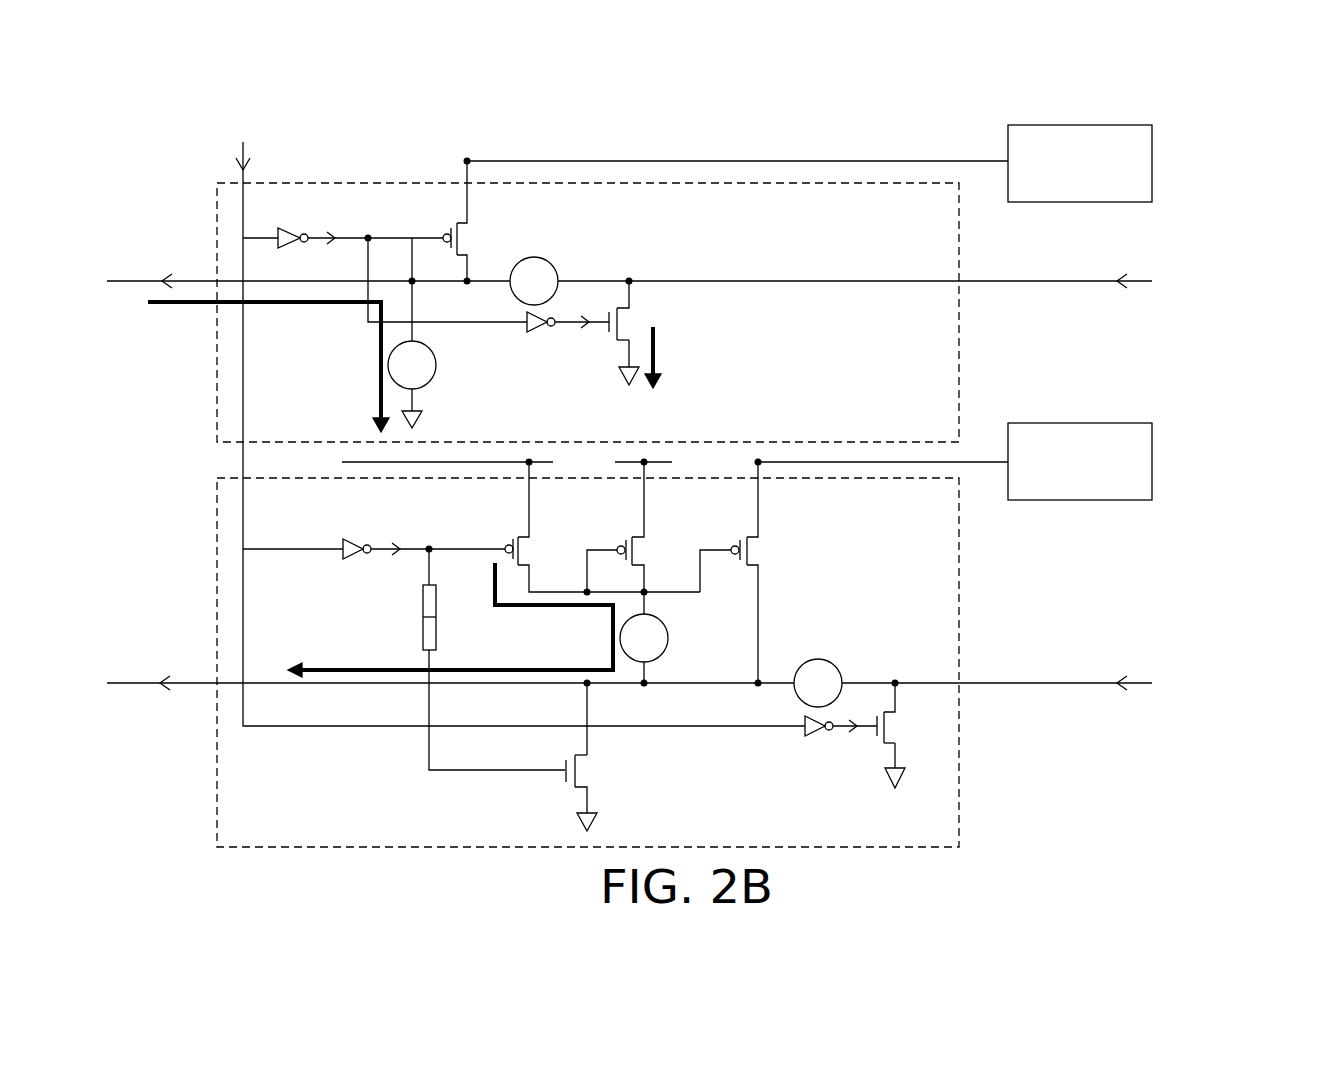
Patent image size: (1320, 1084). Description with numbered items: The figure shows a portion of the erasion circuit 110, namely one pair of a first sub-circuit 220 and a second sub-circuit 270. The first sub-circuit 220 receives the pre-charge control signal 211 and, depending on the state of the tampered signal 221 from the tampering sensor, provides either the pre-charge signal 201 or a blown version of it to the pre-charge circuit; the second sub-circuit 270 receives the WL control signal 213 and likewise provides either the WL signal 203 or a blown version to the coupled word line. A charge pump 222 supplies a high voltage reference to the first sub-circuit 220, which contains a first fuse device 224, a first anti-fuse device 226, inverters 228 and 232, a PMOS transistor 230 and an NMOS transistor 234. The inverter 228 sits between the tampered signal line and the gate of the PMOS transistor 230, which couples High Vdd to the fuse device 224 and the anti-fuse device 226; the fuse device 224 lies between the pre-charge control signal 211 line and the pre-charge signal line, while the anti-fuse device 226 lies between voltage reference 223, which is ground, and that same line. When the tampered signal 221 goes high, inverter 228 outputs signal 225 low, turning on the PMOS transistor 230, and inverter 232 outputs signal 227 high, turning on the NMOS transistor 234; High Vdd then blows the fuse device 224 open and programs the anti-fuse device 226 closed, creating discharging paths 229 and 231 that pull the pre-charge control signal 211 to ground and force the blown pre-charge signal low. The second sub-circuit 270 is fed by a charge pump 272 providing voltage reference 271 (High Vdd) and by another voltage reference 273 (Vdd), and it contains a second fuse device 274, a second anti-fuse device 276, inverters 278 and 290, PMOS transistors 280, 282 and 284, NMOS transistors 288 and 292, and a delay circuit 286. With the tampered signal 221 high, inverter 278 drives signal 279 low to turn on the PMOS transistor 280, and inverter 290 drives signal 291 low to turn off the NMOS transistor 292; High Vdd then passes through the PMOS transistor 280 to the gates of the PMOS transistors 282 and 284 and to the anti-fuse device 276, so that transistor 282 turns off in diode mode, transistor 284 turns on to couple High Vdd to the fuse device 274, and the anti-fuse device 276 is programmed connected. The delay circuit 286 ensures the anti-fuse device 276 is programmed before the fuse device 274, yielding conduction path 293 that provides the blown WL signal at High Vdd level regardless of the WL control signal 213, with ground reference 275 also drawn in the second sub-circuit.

The erasion circuit 110 is at (1300, 150).
The pre-charge signal 201 is at (158, 251).
The WL signal 203 is at (158, 656).
The pre-charge control signal 211 is at (660, 283).
The WL control signal 213 is at (660, 684).
The first sub-circuit 220 is at (960, 357).
The second sub-circuit 270 is at (960, 750).
The tampered signal 221 is at (783, 143).
The charge pump 222 is at (1080, 203).
The charge pump 272 is at (1080, 501).
The voltage reference 223 is at (681, 569).
The ground 275 is at (613, 826).
The first fuse device 224 is at (553, 260).
The second fuse device 274 is at (815, 659).
The first anti-fuse device 226 is at (436, 358).
The second anti-fuse device 276 is at (667, 632).
The inverter 228 is at (323, 214).
The inverter 232 is at (537, 337).
The inverter 278 is at (355, 560).
The inverter 290 is at (812, 740).
The signal 225 is at (421, 286).
The signal 227 is at (587, 306).
The signal 279 is at (404, 534).
The signal 291 is at (852, 743).
The PMOS transistor 230 is at (470, 233).
The NMOS transistor 234 is at (636, 331).
The PMOS transistor 280 is at (535, 549).
The PMOS transistor 282 is at (650, 549).
The PMOS transistor 284 is at (765, 549).
The NMOS transistor 288 is at (590, 772).
The NMOS transistor 292 is at (897, 731).
The delay circuit 286 is at (423, 630).
The discharging path 229 is at (378, 350).
The discharging path 231 is at (657, 356).
The conduction path 293 is at (470, 670).
The voltage reference 271 is at (515, 460).
The voltage reference 273 is at (665, 460).